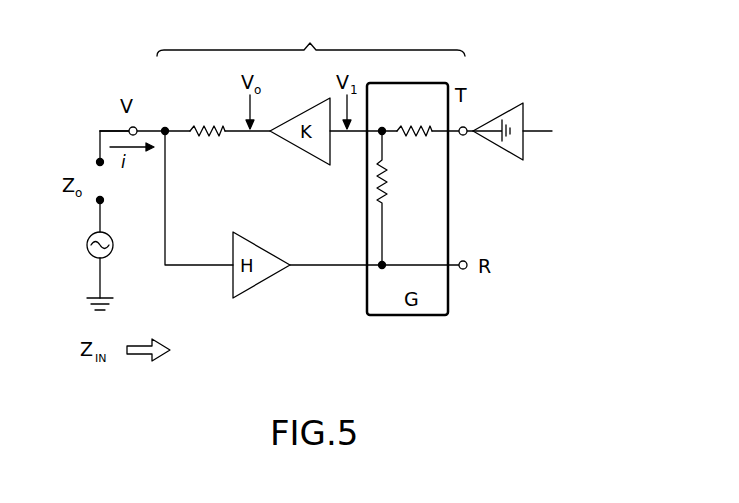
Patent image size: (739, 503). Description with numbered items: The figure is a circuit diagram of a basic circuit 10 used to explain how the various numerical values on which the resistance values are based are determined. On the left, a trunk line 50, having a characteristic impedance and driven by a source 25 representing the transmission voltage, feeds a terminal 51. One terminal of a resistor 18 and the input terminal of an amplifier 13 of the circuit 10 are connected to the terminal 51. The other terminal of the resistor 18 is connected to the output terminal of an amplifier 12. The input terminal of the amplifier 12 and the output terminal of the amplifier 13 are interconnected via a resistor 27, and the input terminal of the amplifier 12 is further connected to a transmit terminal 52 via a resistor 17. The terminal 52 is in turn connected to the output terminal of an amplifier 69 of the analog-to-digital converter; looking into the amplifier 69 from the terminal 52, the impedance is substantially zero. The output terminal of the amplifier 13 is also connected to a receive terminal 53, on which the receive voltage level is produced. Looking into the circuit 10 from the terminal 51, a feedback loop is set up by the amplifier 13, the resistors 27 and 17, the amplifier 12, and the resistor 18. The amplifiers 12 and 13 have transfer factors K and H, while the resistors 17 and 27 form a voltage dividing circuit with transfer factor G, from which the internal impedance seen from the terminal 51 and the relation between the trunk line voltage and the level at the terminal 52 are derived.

The circuit 10 is at (311, 35).
The amplifier 12 is at (312, 155).
The amplifier 13 is at (265, 284).
The resistor 17 is at (414, 114).
The resistor 18 is at (222, 122).
The signal source 25 is at (114, 245).
The resistor 27 is at (387, 180).
The trunk line 50 is at (108, 131).
The terminal 51 is at (136, 128).
The transmit terminal 52 is at (466, 137).
The receive terminal 53 is at (468, 270).
The amplifier 69 is at (507, 110).